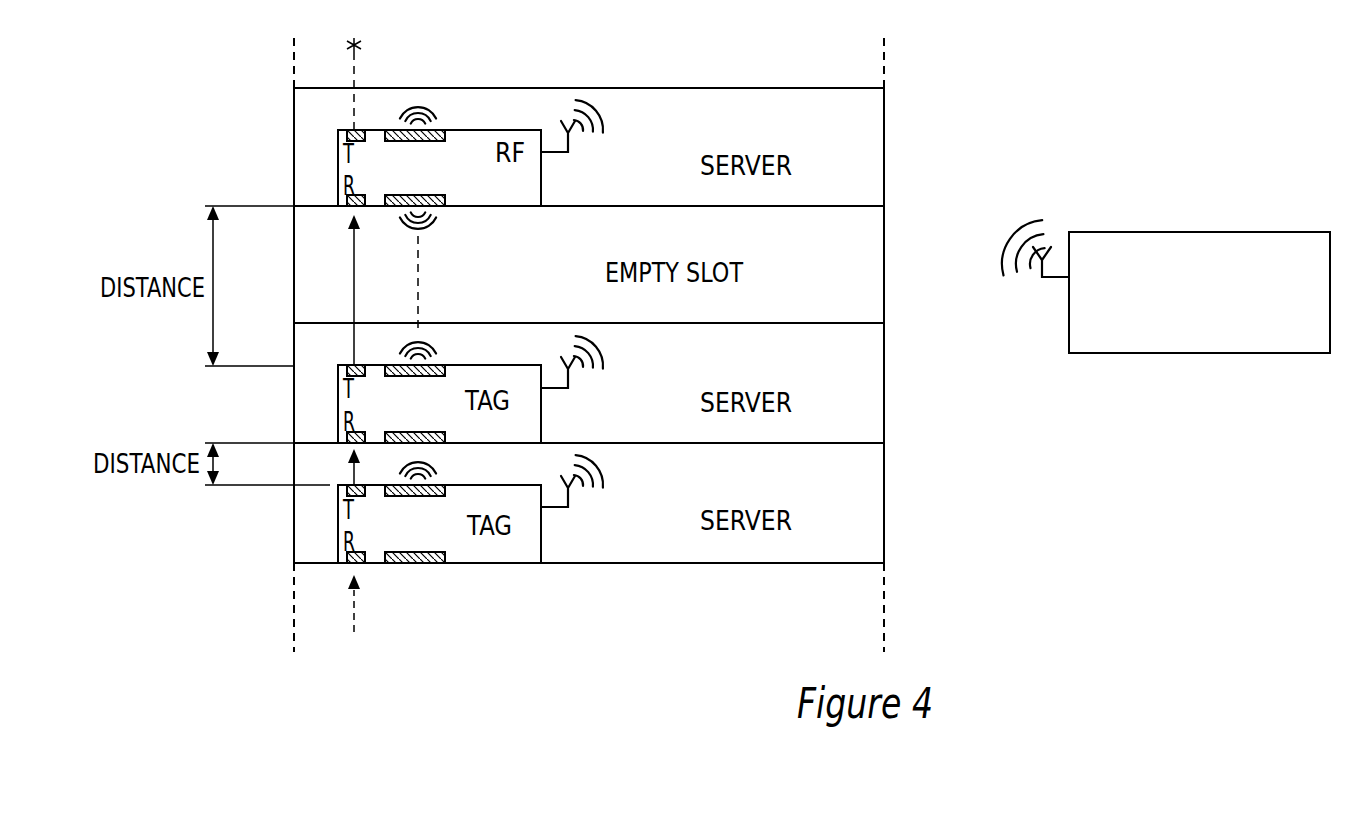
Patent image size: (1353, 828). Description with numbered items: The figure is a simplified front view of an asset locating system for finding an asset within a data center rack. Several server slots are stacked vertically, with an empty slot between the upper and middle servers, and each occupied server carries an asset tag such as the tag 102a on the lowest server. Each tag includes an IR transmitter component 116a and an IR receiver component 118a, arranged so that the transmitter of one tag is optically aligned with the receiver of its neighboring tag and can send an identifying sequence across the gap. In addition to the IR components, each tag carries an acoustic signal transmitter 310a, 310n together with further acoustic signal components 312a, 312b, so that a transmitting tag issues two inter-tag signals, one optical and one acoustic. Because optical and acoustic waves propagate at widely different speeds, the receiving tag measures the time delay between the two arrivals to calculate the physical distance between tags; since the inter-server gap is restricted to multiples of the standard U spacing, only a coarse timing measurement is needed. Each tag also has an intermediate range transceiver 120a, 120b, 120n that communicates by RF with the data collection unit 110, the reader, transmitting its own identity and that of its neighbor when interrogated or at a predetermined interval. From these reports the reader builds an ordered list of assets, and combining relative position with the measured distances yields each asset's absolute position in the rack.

The acoustic signal transmitter 310n is at (442, 130).
The acoustic signal transmitter 310a is at (442, 485).
The acoustic signal component 312b is at (427, 445).
The acoustic signal component 312a is at (432, 564).
The intermediate range transceiver 120n is at (603, 132).
The intermediate range transceiver 120b is at (603, 370).
The intermediate range transceiver 120a is at (603, 490).
The tag 102a is at (541, 538).
The IR receiver component 118a is at (347, 486).
The IR transmitter component 116a is at (350, 566).
The data collection unit 110 is at (1218, 341).